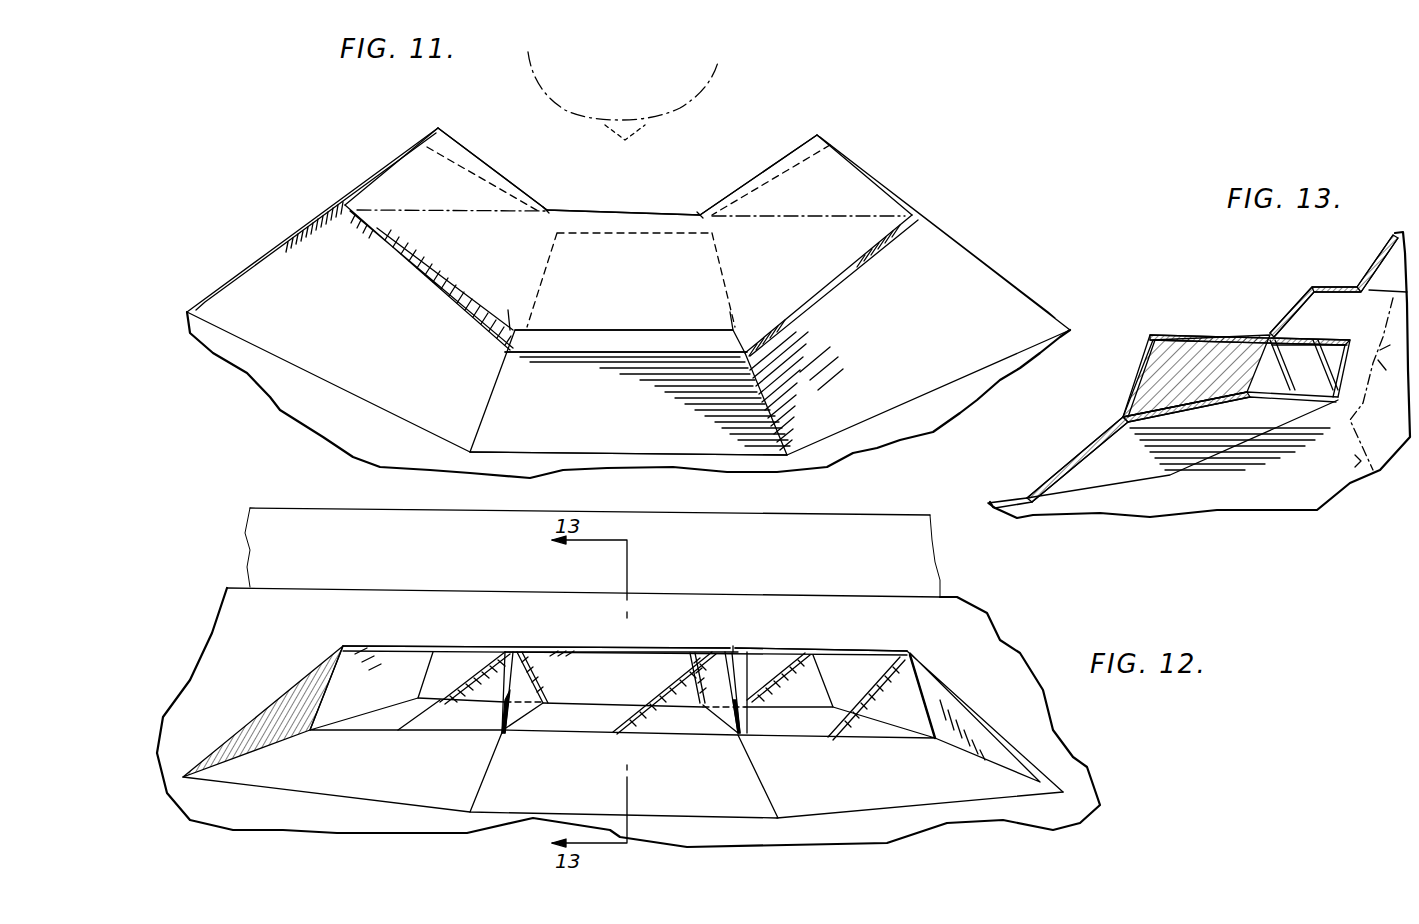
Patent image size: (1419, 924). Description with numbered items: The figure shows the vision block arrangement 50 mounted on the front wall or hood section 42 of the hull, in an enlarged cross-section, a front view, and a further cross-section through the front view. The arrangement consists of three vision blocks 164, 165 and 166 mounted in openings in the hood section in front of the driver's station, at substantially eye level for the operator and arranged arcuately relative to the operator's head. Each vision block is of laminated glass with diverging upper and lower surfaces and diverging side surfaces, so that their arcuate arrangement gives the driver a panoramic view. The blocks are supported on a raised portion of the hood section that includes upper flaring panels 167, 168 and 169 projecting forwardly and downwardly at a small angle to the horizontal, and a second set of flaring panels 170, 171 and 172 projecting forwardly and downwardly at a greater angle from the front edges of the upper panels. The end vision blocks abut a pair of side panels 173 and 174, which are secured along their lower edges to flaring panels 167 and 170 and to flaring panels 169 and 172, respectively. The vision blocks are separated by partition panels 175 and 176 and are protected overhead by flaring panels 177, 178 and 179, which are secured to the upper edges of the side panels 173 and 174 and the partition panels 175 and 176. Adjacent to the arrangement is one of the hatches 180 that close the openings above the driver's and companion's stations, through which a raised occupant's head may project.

In FIG. 11, the front wall or hood section 42 is at (828, 455).
In FIG. 12, the front wall or hood section 42 is at (948, 825).
In FIG. 13, the front wall or hood section 42 is at (1003, 497).
In FIG. 12, the vision block arrangement 50 is at (850, 668).
In FIG. 11, the vision block 164 is at (415, 290).
In FIG. 12, the vision block 164 is at (357, 670).
In FIG. 11, the vision block 165 is at (605, 342).
In FIG. 12, the vision block 165 is at (652, 722).
In FIG. 13, the vision block 165 is at (1152, 380).
In FIG. 11, the vision block 166 is at (820, 290).
In FIG. 12, the vision block 166 is at (817, 727).
In FIG. 12, the upper flaring panel 167 is at (452, 725).
In FIG. 12, the upper flaring panel 168 is at (580, 718).
In FIG. 13, the upper flaring panel 168 is at (1247, 417).
In FIG. 12, the upper flaring panel 169 is at (873, 730).
In FIG. 11, the flaring panel 170 is at (393, 390).
In FIG. 12, the flaring panel 170 is at (288, 778).
In FIG. 11, the flaring panel 171 is at (575, 438).
In FIG. 12, the flaring panel 171 is at (670, 802).
In FIG. 13, the flaring panel 171 is at (1078, 452).
In FIG. 11, the flaring panel 172 is at (890, 393).
In FIG. 12, the flaring panel 172 is at (858, 798).
In FIG. 11, the side panel 173 is at (355, 185).
In FIG. 12, the side panel 173 is at (267, 712).
In FIG. 11, the side panel 174 is at (948, 228).
In FIG. 12, the side panel 174 is at (958, 727).
In FIG. 12, the partition panel 175 is at (512, 683).
In FIG. 12, the partition panel 176 is at (743, 700).
In FIG. 11, the flaring panel 177 is at (497, 264).
In FIG. 12, the flaring panel 177 is at (430, 645).
In FIG. 11, the flaring panel 178 is at (659, 287).
In FIG. 12, the flaring panel 178 is at (627, 645).
In FIG. 13, the flaring panel 178 is at (1208, 333).
In FIG. 11, the flaring panel 179 is at (807, 259).
In FIG. 12, the flaring panel 179 is at (823, 648).
In FIG. 12, the hatch 180 is at (913, 562).
In FIG. 13, the hatch 180 is at (1372, 252).